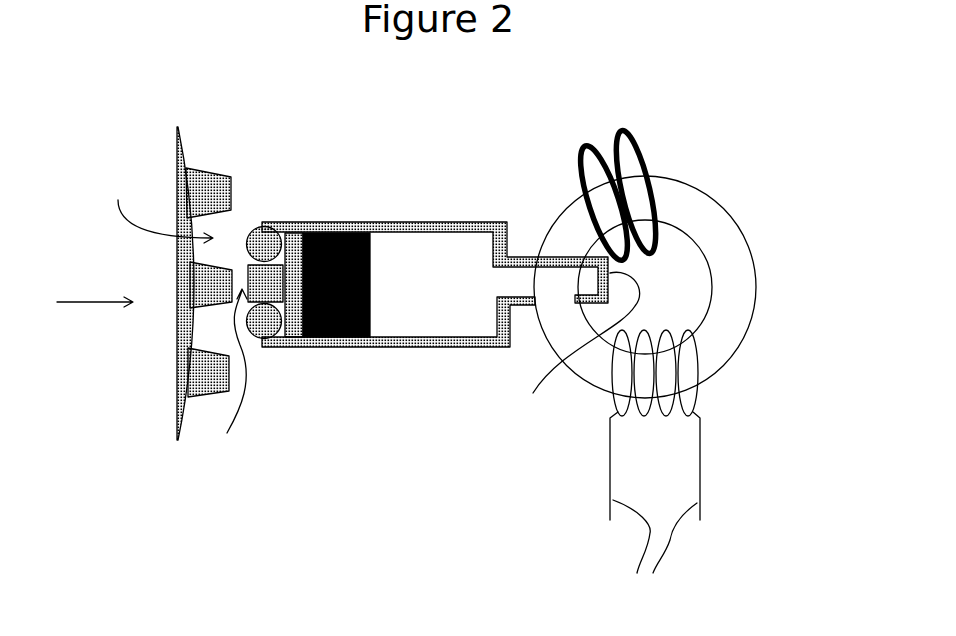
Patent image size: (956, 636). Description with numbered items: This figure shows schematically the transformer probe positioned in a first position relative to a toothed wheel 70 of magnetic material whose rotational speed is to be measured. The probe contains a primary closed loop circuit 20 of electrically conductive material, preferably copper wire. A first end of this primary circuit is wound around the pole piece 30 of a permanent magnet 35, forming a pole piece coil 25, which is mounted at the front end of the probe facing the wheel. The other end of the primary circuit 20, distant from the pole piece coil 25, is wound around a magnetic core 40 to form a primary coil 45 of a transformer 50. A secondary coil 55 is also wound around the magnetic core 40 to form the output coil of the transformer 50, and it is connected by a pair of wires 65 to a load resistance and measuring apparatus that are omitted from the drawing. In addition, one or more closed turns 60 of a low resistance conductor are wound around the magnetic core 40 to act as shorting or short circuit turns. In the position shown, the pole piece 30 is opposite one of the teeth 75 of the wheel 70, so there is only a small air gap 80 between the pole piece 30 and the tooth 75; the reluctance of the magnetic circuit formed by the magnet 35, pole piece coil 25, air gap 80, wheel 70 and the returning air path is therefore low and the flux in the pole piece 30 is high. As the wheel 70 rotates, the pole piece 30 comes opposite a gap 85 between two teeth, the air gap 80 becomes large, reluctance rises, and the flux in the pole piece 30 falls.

The primary closed loop circuit 20 is at (420, 347).
The pole piece coil 25 is at (263, 224).
The pole piece 30 is at (273, 283).
The permanent magnet 35 is at (385, 236).
The magnetic core 40 is at (737, 283).
The primary coil 45 is at (577, 345).
The transformer 50 is at (682, 326).
The secondary coil 55 is at (650, 372).
The closed turns 60 is at (580, 147).
The pair of wires 65 is at (655, 505).
The toothed wheel 70 is at (70, 305).
The tooth 75 is at (213, 288).
The air gap 80 is at (228, 373).
The gap 85 is at (157, 210).